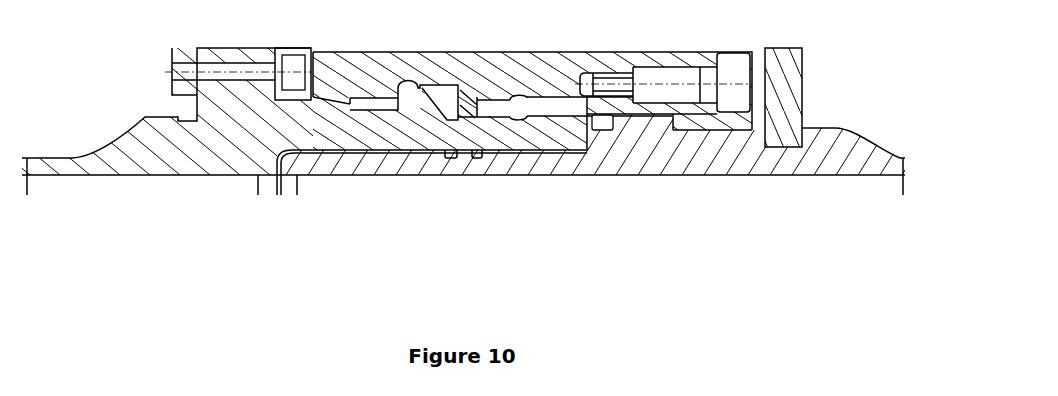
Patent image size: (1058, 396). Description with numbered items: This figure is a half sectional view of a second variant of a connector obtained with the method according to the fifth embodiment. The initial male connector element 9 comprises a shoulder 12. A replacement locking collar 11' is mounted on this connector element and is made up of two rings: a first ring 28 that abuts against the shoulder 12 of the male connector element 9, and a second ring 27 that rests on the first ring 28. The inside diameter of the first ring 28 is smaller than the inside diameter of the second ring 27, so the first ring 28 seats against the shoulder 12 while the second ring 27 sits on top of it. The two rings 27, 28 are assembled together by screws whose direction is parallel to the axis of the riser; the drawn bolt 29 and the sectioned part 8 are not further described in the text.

The first plate 8 is at (210, 155).
The initial male connector element 9 is at (756, 162).
The second ring 27 is at (541, 84).
The first ring 28 is at (693, 118).
The bolt 29 is at (728, 82).
The shoulder 12 is at (680, 128).
The replacement locking collar 11' is at (655, 288).